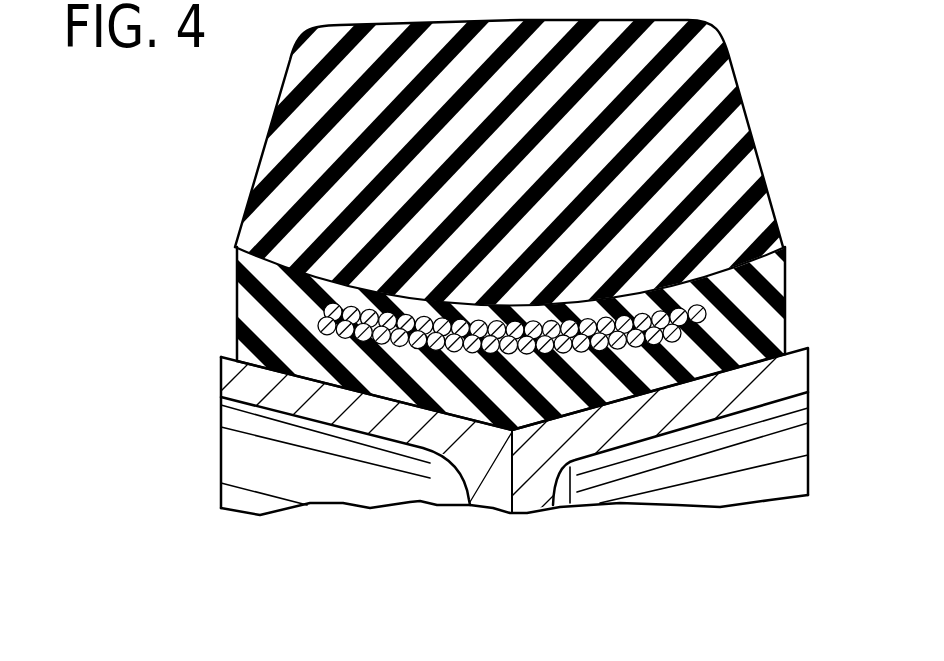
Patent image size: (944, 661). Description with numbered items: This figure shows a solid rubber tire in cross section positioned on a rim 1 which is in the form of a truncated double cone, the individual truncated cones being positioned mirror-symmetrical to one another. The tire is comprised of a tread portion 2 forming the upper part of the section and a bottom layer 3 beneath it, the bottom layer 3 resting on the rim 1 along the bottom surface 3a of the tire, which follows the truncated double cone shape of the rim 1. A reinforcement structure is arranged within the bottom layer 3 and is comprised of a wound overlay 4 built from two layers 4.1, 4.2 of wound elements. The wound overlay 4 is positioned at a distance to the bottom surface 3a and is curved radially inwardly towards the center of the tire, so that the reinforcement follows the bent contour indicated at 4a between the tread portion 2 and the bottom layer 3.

The rim 1 is at (760, 400).
The tread portion 2 is at (720, 90).
The bottom layer 3 is at (775, 265).
The bottom surface 3a is at (623, 398).
The wound overlay 4 is at (502, 292).
The first layer of the wound overlay 4.1 is at (321, 321).
The second layer of the wound overlay 4.2 is at (318, 304).
The particle layer boundary 4a is at (720, 303).